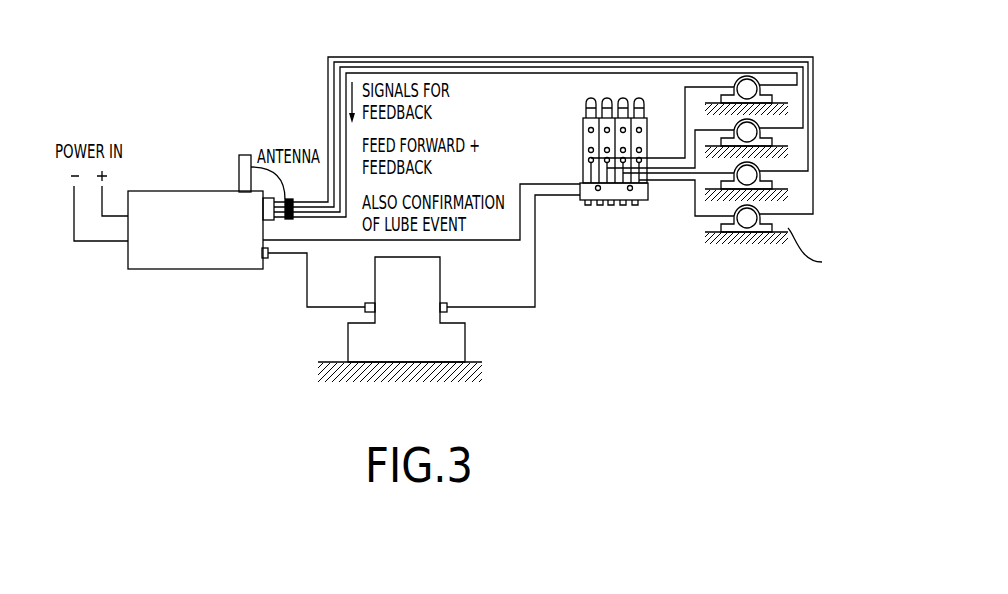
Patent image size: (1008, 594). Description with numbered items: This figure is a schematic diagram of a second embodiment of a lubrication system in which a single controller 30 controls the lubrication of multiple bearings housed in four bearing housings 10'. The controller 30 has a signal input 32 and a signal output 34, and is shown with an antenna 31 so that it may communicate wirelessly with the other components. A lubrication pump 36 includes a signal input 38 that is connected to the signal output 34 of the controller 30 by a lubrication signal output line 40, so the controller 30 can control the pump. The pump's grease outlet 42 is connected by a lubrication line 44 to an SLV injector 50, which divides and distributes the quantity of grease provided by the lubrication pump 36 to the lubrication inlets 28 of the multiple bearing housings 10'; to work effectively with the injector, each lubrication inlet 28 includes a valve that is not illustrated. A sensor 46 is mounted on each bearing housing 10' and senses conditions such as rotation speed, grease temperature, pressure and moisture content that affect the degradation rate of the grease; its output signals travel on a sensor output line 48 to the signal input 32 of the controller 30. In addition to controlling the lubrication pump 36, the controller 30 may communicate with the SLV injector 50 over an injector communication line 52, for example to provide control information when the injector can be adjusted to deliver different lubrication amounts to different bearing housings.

The bearing housing 10' is at (793, 154).
The lubrication inlet 28 is at (716, 226).
The controller 30 is at (167, 270).
The antenna 31 is at (238, 185).
The signal input 32 is at (242, 155).
The signal output 34 is at (266, 259).
The lubrication pump 36 is at (440, 347).
The signal input 38 is at (365, 310).
The lubrication signal output line 40 is at (307, 293).
The grease outlet 42 is at (447, 312).
The lubrication line 44 is at (535, 300).
The sensor 46 is at (762, 85).
The sensor output line 48 is at (572, 57).
The SLV injector 50 is at (583, 130).
The injector communication line 52 is at (478, 240).